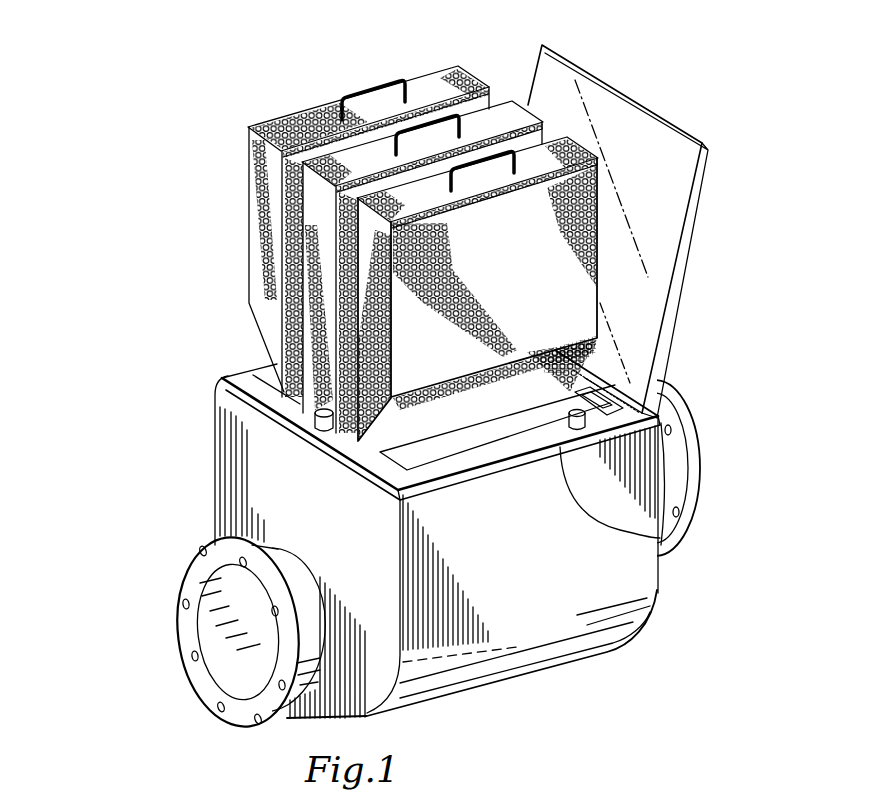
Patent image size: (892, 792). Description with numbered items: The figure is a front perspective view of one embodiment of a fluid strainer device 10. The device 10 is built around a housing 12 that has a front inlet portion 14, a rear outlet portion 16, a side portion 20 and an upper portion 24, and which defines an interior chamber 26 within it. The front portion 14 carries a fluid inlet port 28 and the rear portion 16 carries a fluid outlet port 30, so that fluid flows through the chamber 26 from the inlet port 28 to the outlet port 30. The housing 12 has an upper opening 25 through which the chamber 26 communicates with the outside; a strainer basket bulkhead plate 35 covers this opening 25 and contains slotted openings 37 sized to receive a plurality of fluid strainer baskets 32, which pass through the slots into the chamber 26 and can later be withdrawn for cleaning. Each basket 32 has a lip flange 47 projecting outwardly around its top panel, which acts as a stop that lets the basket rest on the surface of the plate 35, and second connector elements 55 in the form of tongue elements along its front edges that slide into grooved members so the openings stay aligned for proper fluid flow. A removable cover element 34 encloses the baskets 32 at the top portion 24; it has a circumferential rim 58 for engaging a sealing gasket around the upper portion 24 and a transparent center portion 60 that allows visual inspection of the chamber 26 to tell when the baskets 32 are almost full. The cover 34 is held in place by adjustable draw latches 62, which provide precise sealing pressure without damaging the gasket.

The strainer device 10 is at (125, 348).
The housing 12 is at (527, 650).
The front inlet portion 14 is at (292, 493).
The rear outlet portion 16 is at (660, 560).
The side portion 20 is at (643, 623).
The upper portion 24 is at (248, 380).
The upper opening 25 is at (458, 446).
The interior chamber 26 is at (562, 412).
The fluid inlet port 28 is at (222, 660).
The fluid outlet port 30 is at (690, 468).
The fluid strainer baskets 32 is at (508, 110).
The removable cover element 34 is at (650, 85).
The strainer basket bulkhead plate 35 is at (660, 532).
The slotted openings 37 is at (423, 460).
The lip flange 47 is at (250, 163).
The second connector elements 55 is at (287, 143).
The circumferential rim 58 is at (698, 173).
The transparent center portion 60 is at (653, 222).
The adjustable draw latches 62 is at (317, 426).